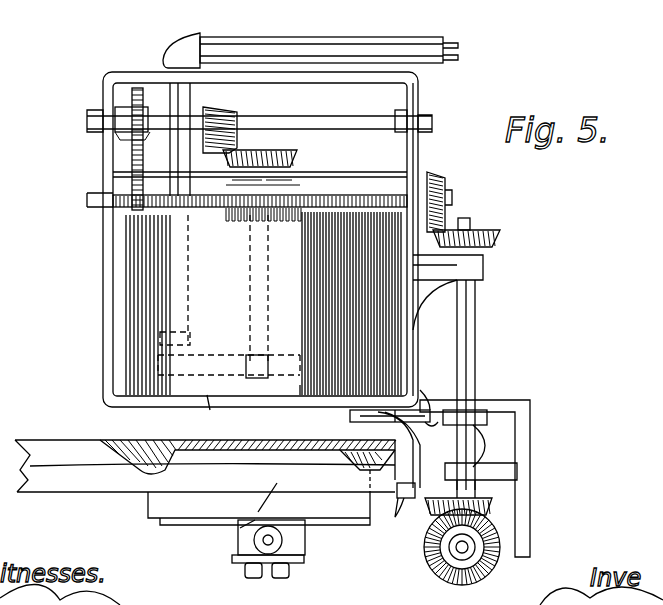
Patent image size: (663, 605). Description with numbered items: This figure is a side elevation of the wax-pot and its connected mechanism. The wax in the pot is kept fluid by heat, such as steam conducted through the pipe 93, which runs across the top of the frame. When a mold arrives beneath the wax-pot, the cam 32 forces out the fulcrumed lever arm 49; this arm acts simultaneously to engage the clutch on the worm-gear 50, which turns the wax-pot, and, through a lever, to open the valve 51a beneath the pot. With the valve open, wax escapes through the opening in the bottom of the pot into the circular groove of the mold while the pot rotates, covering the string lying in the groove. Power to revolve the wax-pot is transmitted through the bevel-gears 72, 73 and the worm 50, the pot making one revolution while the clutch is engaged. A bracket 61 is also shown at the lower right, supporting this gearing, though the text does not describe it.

The pipe 93 is at (290, 47).
The bevel gear 73 is at (440, 222).
The worm-gear 50 is at (259, 241).
The bracket 61 is at (422, 408).
The valve 51a is at (360, 418).
The lever arm 49 is at (387, 468).
The cam 32 is at (407, 497).
The bevel gear 72 is at (447, 548).